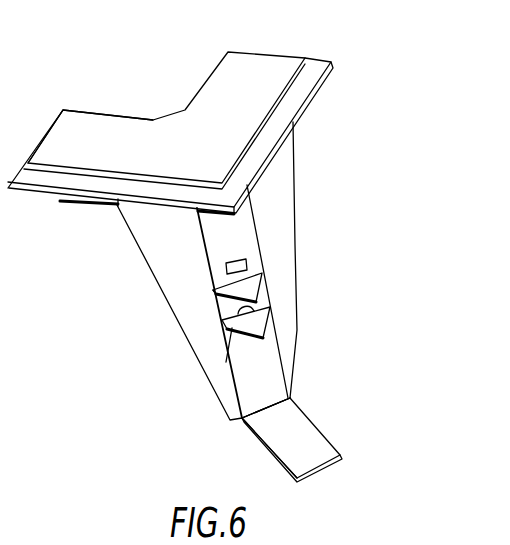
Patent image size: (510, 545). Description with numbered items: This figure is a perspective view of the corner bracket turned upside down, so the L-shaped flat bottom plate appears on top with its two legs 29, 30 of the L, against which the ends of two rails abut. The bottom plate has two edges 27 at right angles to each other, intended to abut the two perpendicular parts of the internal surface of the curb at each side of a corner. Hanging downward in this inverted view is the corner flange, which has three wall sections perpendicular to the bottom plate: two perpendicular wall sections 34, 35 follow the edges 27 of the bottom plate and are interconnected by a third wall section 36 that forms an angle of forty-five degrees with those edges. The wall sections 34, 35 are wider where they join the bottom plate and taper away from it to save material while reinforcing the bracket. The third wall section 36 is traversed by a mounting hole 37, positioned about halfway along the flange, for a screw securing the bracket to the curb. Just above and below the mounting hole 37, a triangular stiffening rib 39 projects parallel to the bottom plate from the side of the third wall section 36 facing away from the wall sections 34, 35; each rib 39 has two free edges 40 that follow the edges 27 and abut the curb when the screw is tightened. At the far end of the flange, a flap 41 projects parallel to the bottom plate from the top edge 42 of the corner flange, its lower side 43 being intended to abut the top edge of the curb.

The edges 27 is at (60, 203).
The leg of the L 29 is at (57, 134).
The leg of the L 30 is at (263, 61).
The wall section 34 is at (175, 278).
The wall section 35 is at (278, 208).
The third wall section 36 is at (267, 363).
The mounting hole 37 is at (240, 305).
The triangular stiffening rib 39 is at (265, 282).
The free edges 40 is at (270, 326).
The flap 41 is at (330, 433).
The top edge 42 is at (290, 398).
The lower side 43 is at (280, 435).